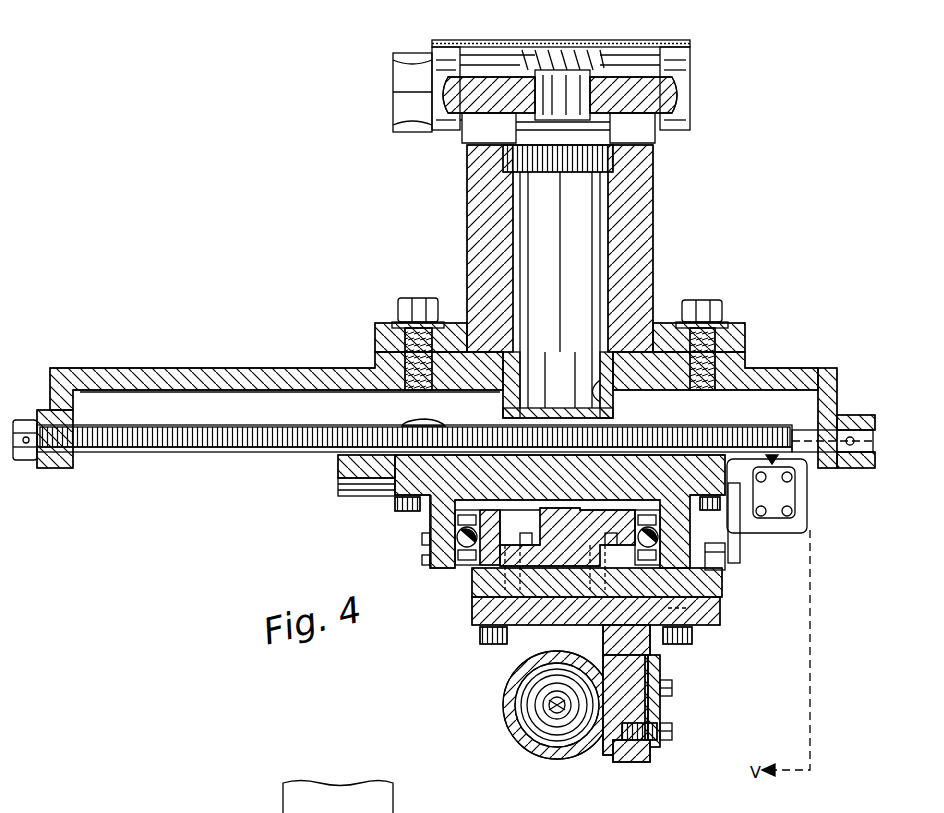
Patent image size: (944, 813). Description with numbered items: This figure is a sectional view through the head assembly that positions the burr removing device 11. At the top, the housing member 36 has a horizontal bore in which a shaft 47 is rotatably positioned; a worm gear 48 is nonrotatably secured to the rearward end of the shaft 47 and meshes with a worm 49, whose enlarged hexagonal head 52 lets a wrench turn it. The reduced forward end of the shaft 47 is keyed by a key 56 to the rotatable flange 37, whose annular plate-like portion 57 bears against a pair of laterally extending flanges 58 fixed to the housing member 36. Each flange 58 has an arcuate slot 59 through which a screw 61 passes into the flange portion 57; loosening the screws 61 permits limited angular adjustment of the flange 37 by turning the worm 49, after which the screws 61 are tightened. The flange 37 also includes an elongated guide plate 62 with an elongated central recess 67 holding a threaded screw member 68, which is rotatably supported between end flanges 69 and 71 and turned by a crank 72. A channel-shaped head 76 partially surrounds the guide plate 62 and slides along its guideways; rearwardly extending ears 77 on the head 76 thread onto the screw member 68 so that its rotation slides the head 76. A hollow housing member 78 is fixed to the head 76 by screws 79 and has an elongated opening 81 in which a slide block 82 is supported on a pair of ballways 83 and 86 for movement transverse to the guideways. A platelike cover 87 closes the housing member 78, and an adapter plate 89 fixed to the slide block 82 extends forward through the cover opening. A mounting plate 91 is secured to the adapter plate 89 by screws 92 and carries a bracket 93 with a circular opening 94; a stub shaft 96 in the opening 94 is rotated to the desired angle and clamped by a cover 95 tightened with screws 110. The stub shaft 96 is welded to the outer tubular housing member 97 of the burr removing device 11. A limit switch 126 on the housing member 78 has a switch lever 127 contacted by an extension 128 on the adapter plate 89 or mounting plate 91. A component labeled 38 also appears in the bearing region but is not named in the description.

The burr removing device 11 is at (539, 719).
The housing member 36 is at (638, 230).
The rotatable flange 37 is at (248, 362).
The bearing assembly 38 is at (418, 566).
The shaft 47 is at (525, 216).
The worm gear 48 is at (668, 96).
The worm 49 is at (602, 46).
The enlarged hexagonal head 52 is at (420, 76).
The key 56 is at (592, 396).
The annular plate-like portion 57 is at (735, 358).
The laterally extending flanges 58 is at (442, 322).
The arcuate slot 59 is at (405, 306).
The screw 61 is at (408, 298).
The elongated guide plate 62 is at (333, 370).
The elongated central recess 67 is at (176, 395).
The threaded screw member 68 is at (236, 455).
The end flange 69 is at (62, 462).
The end flange 71 is at (830, 402).
The crank 72 is at (850, 462).
The channel-shaped head 76 is at (345, 470).
The rearwardly extending ears 77 is at (422, 420).
The hollow housing member 78 is at (436, 528).
The screws 79 is at (400, 510).
The elongated opening 81 is at (622, 492).
The slide block 82 is at (545, 532).
The ballway 83 is at (452, 555).
The ballway 86 is at (622, 532).
The platelike cover 87 is at (672, 586).
The adapter plate 89 is at (692, 606).
The mounting plate 91 is at (697, 624).
The screws 92 is at (480, 638).
The bracket 93 is at (632, 762).
The circular opening 94 is at (606, 648).
The cover 95 is at (656, 670).
The stub shaft 96 is at (640, 712).
The outer tubular housing member 97 is at (522, 672).
The screws 110 is at (668, 740).
The limit switch 126 is at (790, 500).
The switch lever 127 is at (742, 542).
The extension 128 is at (714, 562).